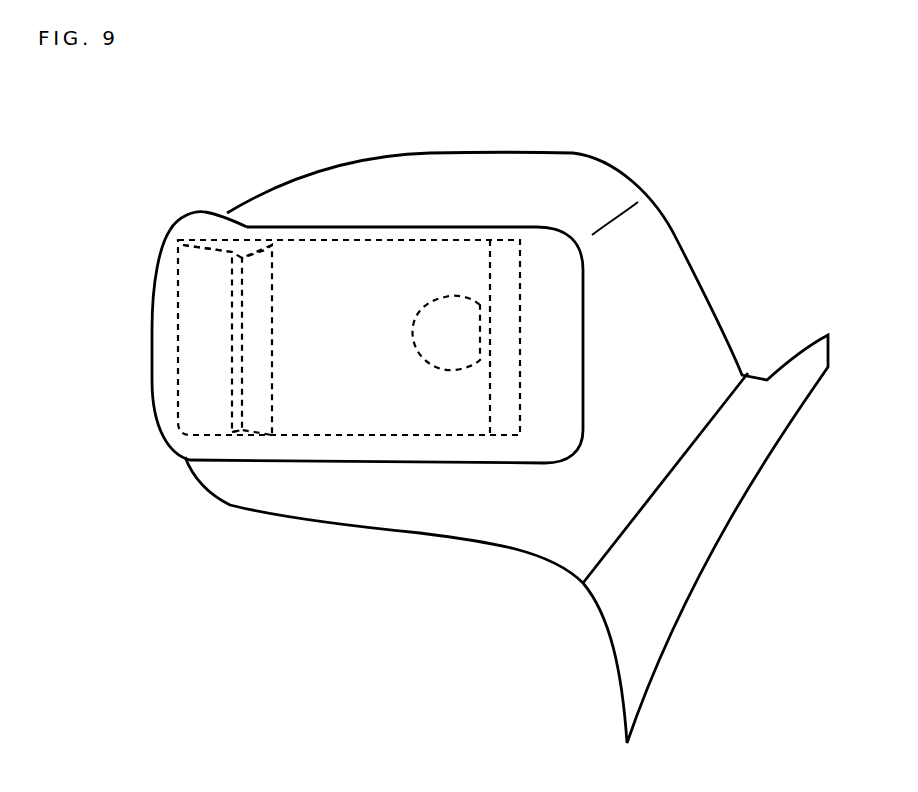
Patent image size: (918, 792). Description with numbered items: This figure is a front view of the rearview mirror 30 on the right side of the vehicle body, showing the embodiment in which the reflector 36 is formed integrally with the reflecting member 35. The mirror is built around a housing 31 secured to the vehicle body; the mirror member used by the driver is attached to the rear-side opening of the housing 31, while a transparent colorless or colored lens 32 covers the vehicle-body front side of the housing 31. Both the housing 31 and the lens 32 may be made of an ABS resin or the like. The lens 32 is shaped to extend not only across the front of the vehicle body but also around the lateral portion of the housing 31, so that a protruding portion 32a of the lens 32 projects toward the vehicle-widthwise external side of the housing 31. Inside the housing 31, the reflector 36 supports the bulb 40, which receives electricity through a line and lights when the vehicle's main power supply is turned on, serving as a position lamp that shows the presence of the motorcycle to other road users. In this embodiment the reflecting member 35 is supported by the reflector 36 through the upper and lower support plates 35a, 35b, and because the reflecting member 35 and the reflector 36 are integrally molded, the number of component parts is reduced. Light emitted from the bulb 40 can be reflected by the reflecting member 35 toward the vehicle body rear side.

The rearview mirror 30 is at (530, 112).
The housing 31 is at (602, 165).
The lens 32 is at (562, 338).
The protruding portion 32a is at (200, 201).
The reflecting member 35 is at (193, 335).
The upper support plate 35a is at (247, 245).
The lower support plate 35b is at (247, 436).
The reflector 36 is at (428, 240).
The bulb 40 is at (433, 367).